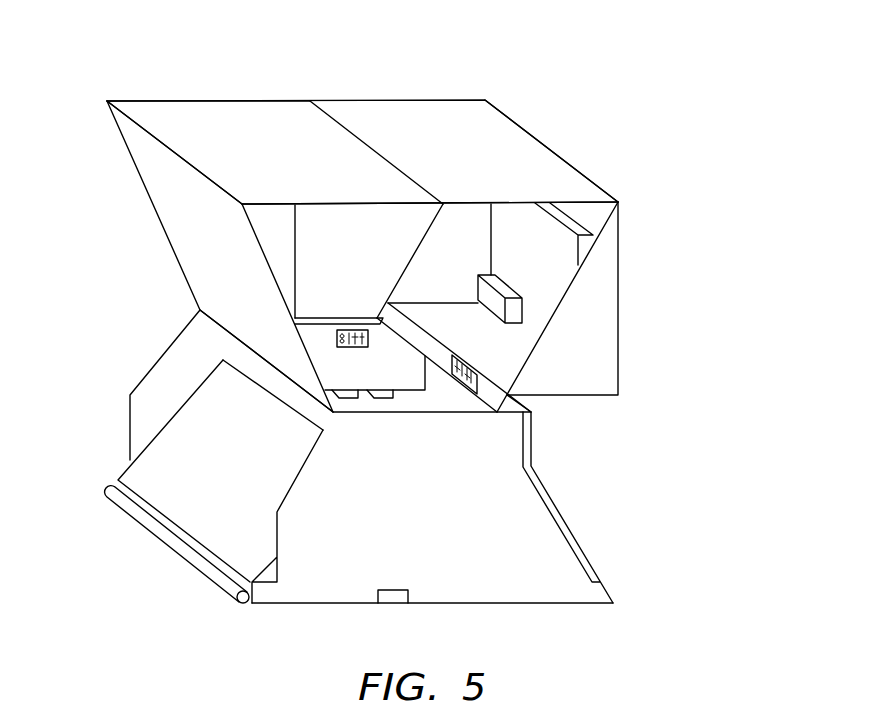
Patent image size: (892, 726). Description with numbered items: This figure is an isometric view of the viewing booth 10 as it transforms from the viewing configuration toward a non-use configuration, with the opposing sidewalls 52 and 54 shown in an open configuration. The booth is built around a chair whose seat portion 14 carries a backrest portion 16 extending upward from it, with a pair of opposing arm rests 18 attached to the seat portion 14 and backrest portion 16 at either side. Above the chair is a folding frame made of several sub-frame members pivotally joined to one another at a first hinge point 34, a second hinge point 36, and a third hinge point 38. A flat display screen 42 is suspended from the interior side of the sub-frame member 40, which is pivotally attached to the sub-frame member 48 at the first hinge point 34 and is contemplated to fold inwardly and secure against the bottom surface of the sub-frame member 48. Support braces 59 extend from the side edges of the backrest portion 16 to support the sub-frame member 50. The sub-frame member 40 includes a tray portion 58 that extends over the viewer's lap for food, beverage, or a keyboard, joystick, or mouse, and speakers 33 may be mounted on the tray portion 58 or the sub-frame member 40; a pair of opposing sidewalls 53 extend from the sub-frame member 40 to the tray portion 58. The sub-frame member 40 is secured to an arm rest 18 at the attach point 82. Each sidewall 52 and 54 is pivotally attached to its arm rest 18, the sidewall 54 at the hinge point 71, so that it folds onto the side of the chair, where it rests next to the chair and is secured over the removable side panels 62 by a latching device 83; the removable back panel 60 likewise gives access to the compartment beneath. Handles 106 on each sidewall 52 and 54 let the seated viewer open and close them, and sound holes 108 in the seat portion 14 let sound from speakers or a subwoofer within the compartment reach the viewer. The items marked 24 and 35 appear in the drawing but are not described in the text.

The viewing booth 10 is at (703, 326).
The seat portion 14 is at (417, 405).
The backrest portion 16 is at (193, 225).
The arm rests 18 is at (317, 323).
The roller 24 is at (215, 573).
The speakers 33 is at (485, 273).
The first hinge point 34 is at (487, 96).
The label 35 is at (337, 337).
The second hinge point 36 is at (310, 101).
The third hinge point 38 is at (107, 98).
The sub-frame member 40 is at (622, 295).
The display screen 42 is at (553, 210).
The sub-frame member 48 is at (535, 175).
The sub-frame member 50 is at (218, 118).
The sidewall 52 is at (163, 353).
The sidewalls 53 is at (410, 257).
The sidewall 54 is at (492, 604).
The tray portion 58 is at (445, 336).
The support braces 59 is at (272, 212).
The back panel 60 is at (237, 469).
The side panels 62 is at (354, 382).
The hinge point 71 is at (327, 413).
The attach point 82 is at (377, 317).
The latching device 83 is at (387, 603).
The handles 106 is at (527, 536).
The sound holes 108 is at (353, 398).